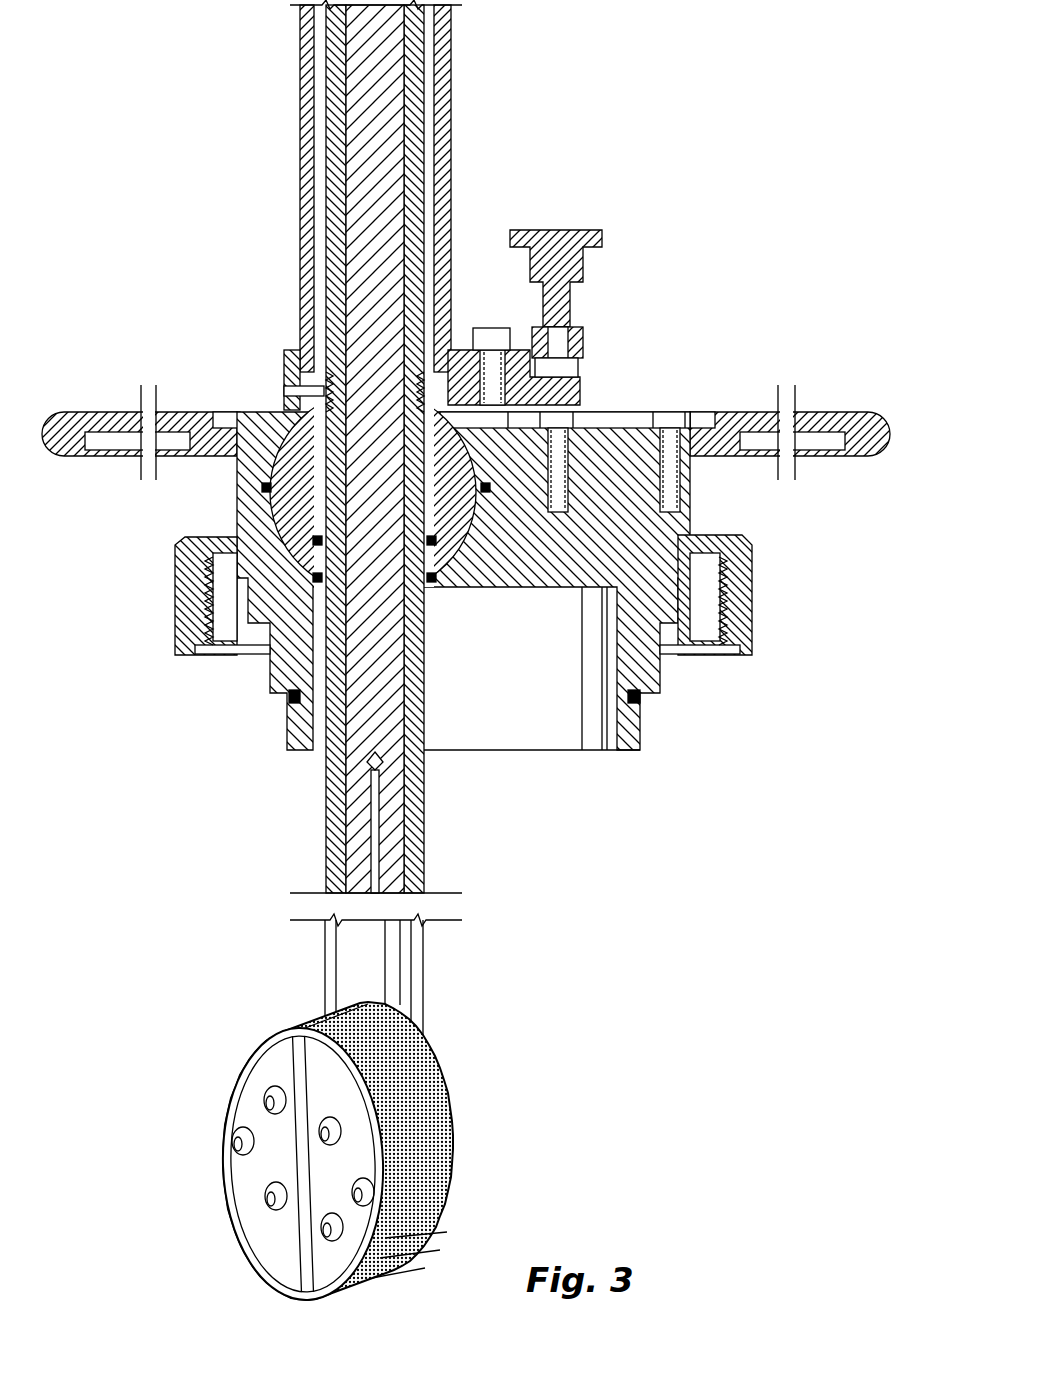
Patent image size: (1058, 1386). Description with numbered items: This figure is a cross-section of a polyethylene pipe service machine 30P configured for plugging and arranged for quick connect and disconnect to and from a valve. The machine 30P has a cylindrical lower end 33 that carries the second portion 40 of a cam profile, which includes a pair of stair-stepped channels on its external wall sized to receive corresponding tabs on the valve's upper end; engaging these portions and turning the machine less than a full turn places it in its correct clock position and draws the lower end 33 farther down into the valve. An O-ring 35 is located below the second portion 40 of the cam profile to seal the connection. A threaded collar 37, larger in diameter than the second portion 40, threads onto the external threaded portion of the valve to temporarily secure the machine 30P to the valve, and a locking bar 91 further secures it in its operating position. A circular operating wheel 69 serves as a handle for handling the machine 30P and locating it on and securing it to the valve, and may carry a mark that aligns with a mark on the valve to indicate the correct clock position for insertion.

The plugging machine 30P is at (270, 149).
The locking bar 91 is at (590, 235).
The operating wheel 69 is at (858, 408).
The threaded collar 37 is at (752, 592).
The second portion of the cam profile 40 is at (685, 605).
The lower end 33 is at (268, 676).
The O-ring 35 is at (645, 705).